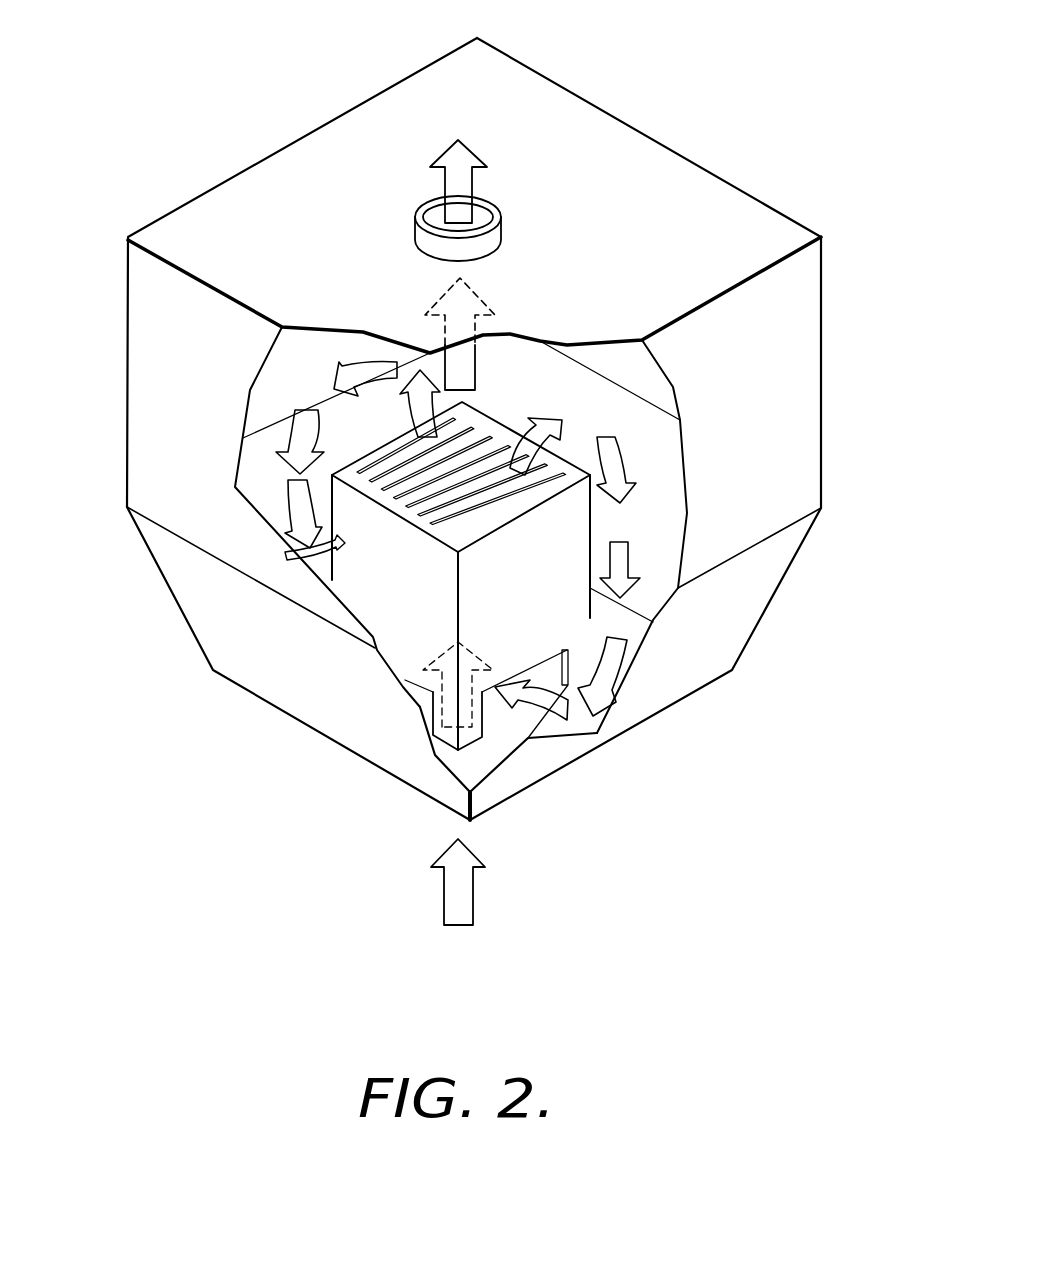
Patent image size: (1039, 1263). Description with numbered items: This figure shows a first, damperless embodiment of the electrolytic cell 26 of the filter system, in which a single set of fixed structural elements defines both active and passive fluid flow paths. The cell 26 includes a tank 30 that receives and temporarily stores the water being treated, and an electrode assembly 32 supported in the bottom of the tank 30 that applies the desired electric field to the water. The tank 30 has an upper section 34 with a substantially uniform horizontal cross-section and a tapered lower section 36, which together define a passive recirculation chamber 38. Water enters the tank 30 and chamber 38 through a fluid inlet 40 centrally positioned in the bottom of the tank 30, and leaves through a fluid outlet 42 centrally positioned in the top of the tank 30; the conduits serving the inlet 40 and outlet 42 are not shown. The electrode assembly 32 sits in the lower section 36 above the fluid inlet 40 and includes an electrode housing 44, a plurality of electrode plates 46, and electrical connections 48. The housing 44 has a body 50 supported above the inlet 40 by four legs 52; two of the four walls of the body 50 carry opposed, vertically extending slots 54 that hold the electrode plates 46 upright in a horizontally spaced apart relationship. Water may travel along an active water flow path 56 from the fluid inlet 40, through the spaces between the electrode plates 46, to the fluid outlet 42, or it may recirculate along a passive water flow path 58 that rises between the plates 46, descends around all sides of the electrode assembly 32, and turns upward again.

The cell 26 is at (127, 327).
The tank 30 is at (822, 468).
The electrode assembly 32 is at (342, 516).
The upper section 34 is at (127, 398).
The lower section 36 is at (177, 598).
The passive recirculation chamber 38 is at (650, 460).
The fluid inlet 40 is at (410, 668).
The fluid outlet 42 is at (487, 193).
The electrode housing 44 is at (493, 688).
The electrode plates 46 is at (453, 527).
The electrical connections 48 is at (335, 540).
The body 50 is at (590, 613).
The legs 52 is at (577, 665).
The slots 54 is at (507, 505).
The active water flow path 56 is at (510, 297).
The passive water flow path 58 is at (367, 365).